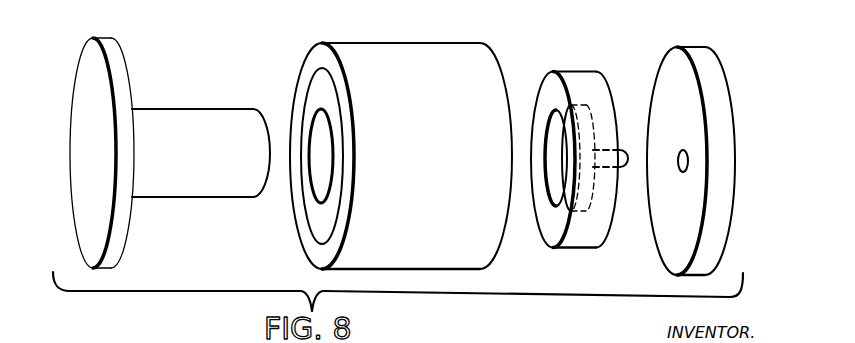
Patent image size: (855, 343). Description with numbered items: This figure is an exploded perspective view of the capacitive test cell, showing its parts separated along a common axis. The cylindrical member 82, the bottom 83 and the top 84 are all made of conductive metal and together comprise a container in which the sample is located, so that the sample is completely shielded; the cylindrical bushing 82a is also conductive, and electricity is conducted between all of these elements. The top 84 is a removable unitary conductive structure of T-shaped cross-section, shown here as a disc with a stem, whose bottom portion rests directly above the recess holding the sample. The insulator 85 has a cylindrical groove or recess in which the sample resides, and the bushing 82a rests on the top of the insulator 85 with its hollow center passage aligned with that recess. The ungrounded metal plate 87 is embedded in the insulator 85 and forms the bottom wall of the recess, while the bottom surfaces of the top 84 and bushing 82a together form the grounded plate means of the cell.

The cylindrical member 82 is at (443, 52).
The cylindrical bushing 82a is at (322, 92).
The bottom 83 is at (693, 68).
The top 84 is at (147, 102).
The insulator 85 is at (582, 76).
The ungrounded metal plate 87 is at (568, 202).